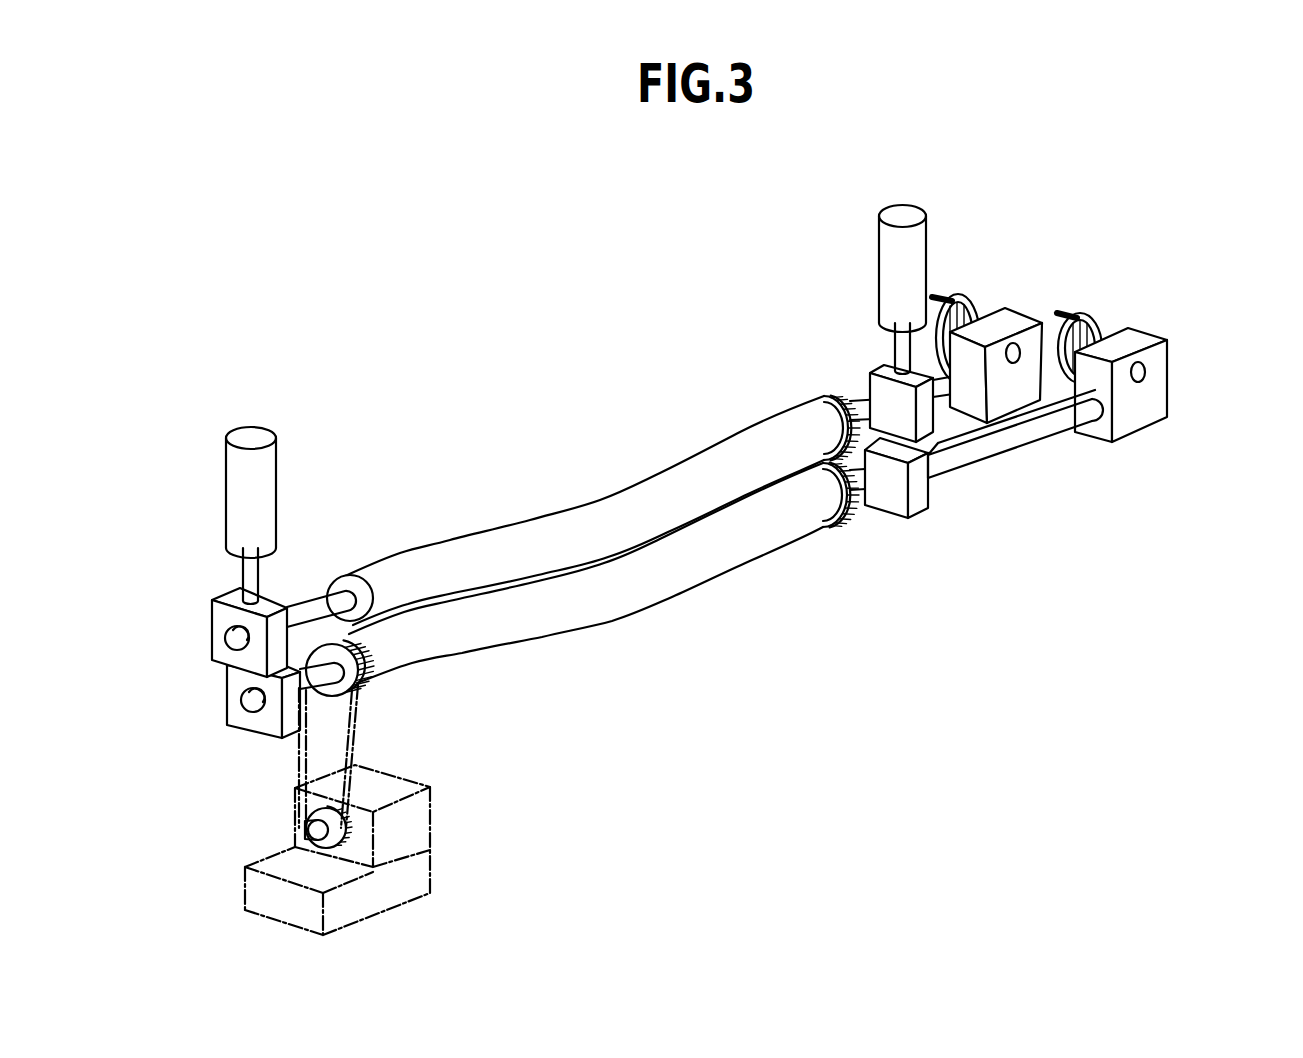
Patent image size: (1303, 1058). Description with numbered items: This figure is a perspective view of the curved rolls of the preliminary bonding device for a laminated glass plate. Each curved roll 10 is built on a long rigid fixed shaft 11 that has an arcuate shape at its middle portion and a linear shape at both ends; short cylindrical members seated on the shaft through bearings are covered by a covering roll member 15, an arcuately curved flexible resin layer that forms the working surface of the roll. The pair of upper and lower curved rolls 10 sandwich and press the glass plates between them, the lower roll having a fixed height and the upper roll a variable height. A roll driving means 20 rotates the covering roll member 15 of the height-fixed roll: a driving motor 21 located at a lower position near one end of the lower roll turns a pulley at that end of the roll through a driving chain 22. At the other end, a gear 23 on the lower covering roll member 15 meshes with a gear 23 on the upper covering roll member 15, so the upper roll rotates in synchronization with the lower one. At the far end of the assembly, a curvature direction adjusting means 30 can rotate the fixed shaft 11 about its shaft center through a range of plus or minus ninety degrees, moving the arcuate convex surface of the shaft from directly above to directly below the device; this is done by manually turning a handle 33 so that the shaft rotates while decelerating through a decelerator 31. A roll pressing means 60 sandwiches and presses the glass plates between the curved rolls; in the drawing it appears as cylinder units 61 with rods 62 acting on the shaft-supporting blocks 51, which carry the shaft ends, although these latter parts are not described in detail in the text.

The curved roll 10 is at (609, 516).
The fixed shaft 11 is at (598, 543).
The covering roll member 15 is at (693, 490).
The roll driving means 20 is at (414, 810).
The driving motor 21 is at (418, 820).
The driving chain 22 is at (355, 728).
The gear 23 is at (844, 399).
The curvature direction adjusting means 30 is at (1103, 363).
The decelerator 31 is at (1148, 394).
The handle 33 is at (1070, 324).
The bearing block 51 is at (237, 683).
The roll pressing means 60 is at (579, 363).
The cylinder 61 is at (250, 497).
The rod 62 is at (248, 573).